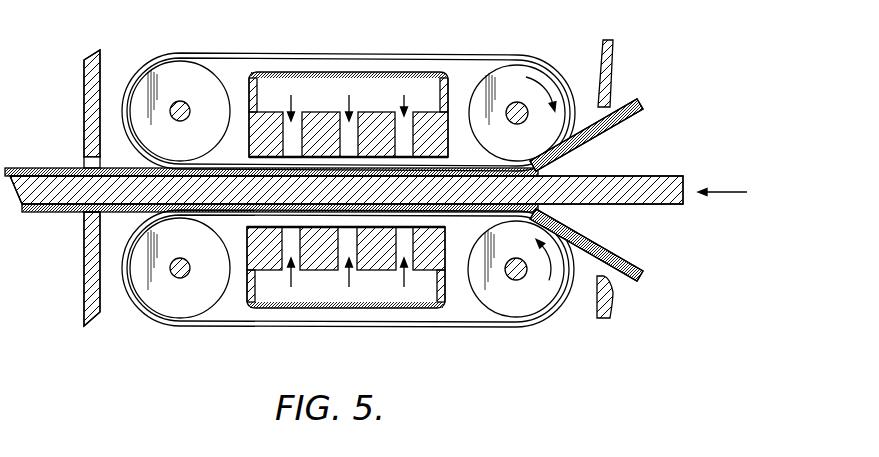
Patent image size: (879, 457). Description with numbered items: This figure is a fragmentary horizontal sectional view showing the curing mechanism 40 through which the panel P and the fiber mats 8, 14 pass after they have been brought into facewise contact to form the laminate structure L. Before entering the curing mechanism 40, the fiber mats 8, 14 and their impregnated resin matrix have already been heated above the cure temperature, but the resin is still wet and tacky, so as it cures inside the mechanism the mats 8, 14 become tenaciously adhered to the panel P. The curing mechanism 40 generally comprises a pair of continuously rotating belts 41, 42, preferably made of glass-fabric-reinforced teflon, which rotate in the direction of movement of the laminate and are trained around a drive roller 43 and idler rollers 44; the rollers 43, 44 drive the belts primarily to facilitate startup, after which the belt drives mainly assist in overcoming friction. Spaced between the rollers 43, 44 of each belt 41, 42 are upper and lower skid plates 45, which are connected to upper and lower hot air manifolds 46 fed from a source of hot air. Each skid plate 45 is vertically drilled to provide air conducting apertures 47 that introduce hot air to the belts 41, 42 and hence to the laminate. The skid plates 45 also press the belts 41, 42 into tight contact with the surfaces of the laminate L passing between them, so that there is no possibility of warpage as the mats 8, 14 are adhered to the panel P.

The fiber mat 8 is at (117, 80).
The fiber mat 14 is at (626, 107).
The curing mechanism 40 is at (348, 86).
The continuously rotating belt 41 is at (472, 55).
The continuously rotating belt 42 is at (465, 325).
The drive roller 43 is at (190, 76).
The idler roller 44 is at (518, 72).
The skid plate 45 is at (328, 96).
The hot air manifold 46 is at (347, 191).
The air conducting aperture 47 is at (406, 118).
The laminate structure L is at (58, 168).
The panel P is at (620, 183).